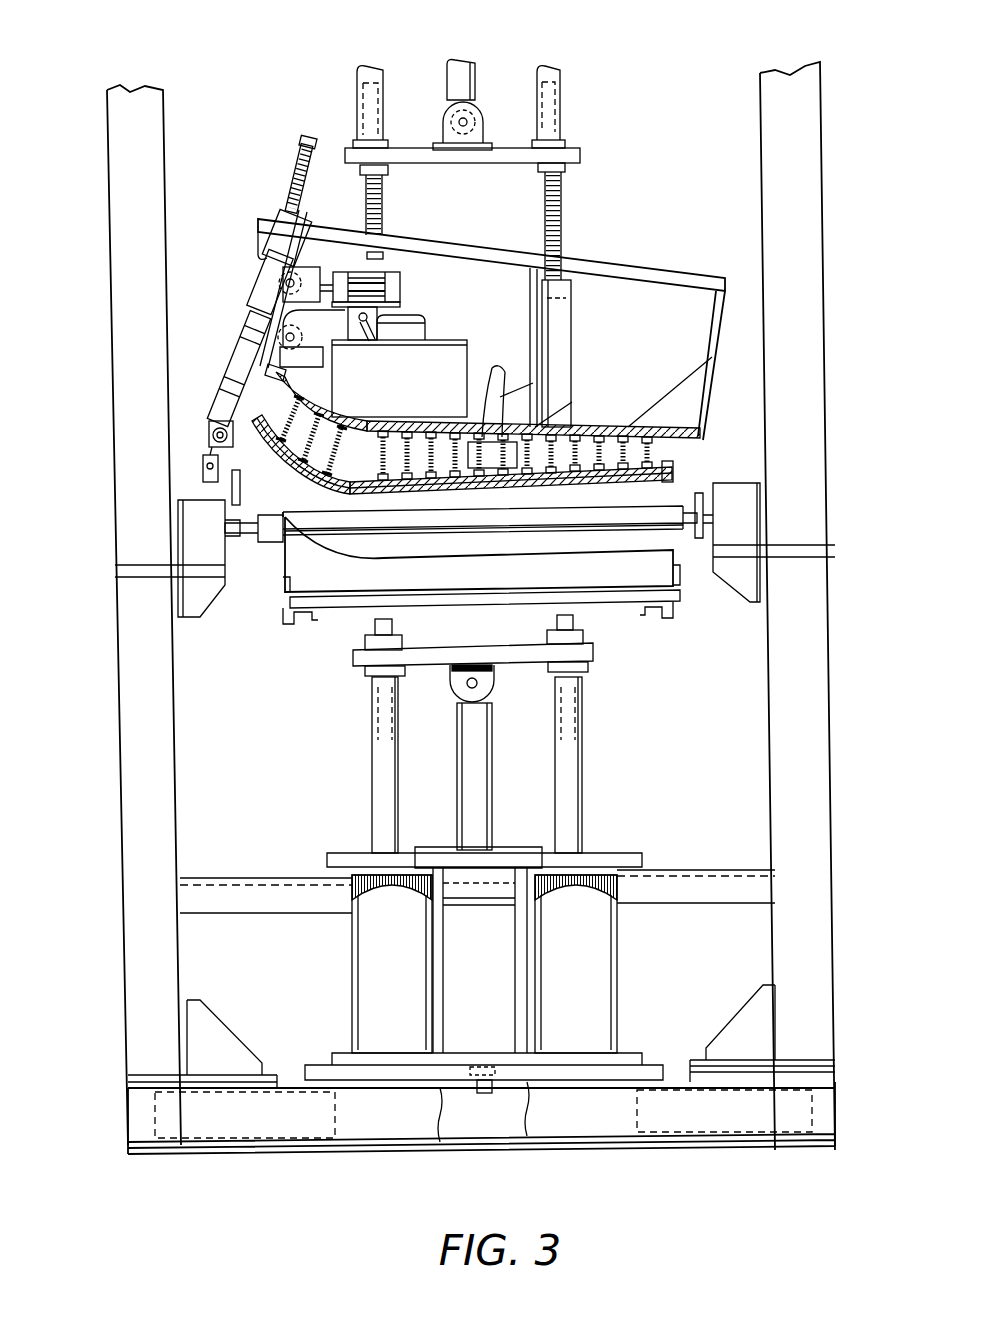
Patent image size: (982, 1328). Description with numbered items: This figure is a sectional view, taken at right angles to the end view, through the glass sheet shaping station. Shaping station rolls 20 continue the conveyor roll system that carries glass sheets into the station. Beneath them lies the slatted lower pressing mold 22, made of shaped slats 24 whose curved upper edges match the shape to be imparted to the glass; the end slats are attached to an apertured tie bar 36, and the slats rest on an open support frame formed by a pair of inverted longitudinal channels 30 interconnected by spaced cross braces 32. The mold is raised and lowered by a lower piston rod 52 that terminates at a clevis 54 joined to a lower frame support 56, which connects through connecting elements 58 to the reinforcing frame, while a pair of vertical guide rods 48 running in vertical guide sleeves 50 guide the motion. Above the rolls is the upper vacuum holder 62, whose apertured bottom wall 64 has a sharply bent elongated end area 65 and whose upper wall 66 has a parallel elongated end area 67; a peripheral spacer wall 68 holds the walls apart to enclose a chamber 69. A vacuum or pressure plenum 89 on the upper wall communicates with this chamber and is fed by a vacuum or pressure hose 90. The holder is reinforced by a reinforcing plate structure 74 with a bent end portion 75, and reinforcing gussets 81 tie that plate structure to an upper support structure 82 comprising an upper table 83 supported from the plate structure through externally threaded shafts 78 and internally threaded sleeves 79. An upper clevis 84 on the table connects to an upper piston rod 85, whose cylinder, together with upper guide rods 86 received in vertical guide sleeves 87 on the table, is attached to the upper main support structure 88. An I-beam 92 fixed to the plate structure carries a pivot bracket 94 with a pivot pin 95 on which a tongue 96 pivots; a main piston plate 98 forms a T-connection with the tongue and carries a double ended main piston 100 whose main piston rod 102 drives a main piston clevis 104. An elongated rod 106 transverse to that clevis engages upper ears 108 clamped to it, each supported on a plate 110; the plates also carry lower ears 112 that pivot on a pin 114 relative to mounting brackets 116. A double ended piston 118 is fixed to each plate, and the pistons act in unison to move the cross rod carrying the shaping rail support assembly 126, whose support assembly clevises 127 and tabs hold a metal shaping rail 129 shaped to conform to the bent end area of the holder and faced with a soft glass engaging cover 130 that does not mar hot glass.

The shaping station rolls 20 is at (358, 518).
The slatted lower pressing mold 22 is at (246, 603).
The shaped slats 24 is at (405, 570).
The inverted longitudinal channels 30 is at (292, 623).
The cross braces 32 is at (588, 610).
The apertured tie bar 36 is at (744, 600).
The vertical guide rods 48 is at (368, 670).
The vertical guide sleeves 50 is at (372, 735).
The lower piston rod 52 is at (492, 775).
The clevis 54 is at (494, 682).
The lower frame support 56 is at (440, 650).
The connecting elements 58 is at (550, 630).
The upper vacuum holder 62 is at (268, 442).
The apertured bottom wall 64 is at (660, 482).
The elongated end area 65 is at (299, 453).
The upper wall 66 is at (670, 440).
The elongated end area 67 is at (283, 412).
The peripheral spacer wall 68 is at (673, 478).
The chamber 69 is at (440, 485).
The reinforcing plate structure 74 is at (578, 423).
The bent end portion 75 is at (285, 380).
The externally threaded shafts 78 is at (562, 213).
The internally threaded sleeves 79 is at (568, 330).
The reinforcing gussets 81 is at (650, 412).
The upper support structure 82 is at (630, 262).
The upper table 83 is at (424, 147).
The upper clevis 84 is at (480, 108).
The upper piston rod 85 is at (460, 60).
The upper guide rods 86 is at (357, 80).
The vertical guide sleeves 87 is at (364, 100).
The upper main support structure 88 is at (760, 118).
The vacuum or pressure plenum 89 is at (472, 458).
The vacuum or pressure hose 90 is at (484, 395).
The I-beam 92 is at (468, 342).
The pivot bracket 94 is at (412, 322).
The pivot pin 95 is at (369, 342).
The tongue 96 is at (382, 318).
The main piston plate 98 is at (356, 338).
The double ended main piston 100 is at (372, 272).
The main piston rod 102 is at (326, 278).
The main piston clevis 104 is at (312, 250).
The elongated rod 106 is at (282, 284).
The upper ears 108 is at (300, 290).
The plates 110 is at (297, 215).
The lower ears 112 is at (311, 338).
The pin 114 is at (245, 348).
The mounting brackets 116 is at (458, 336).
The double ended piston 118 is at (268, 258).
The shaping rail support assembly 126 is at (186, 478).
The support assembly clevises 127 is at (209, 434).
The metal shaping rail 129 is at (236, 506).
The glass engaging cover 130 is at (240, 490).